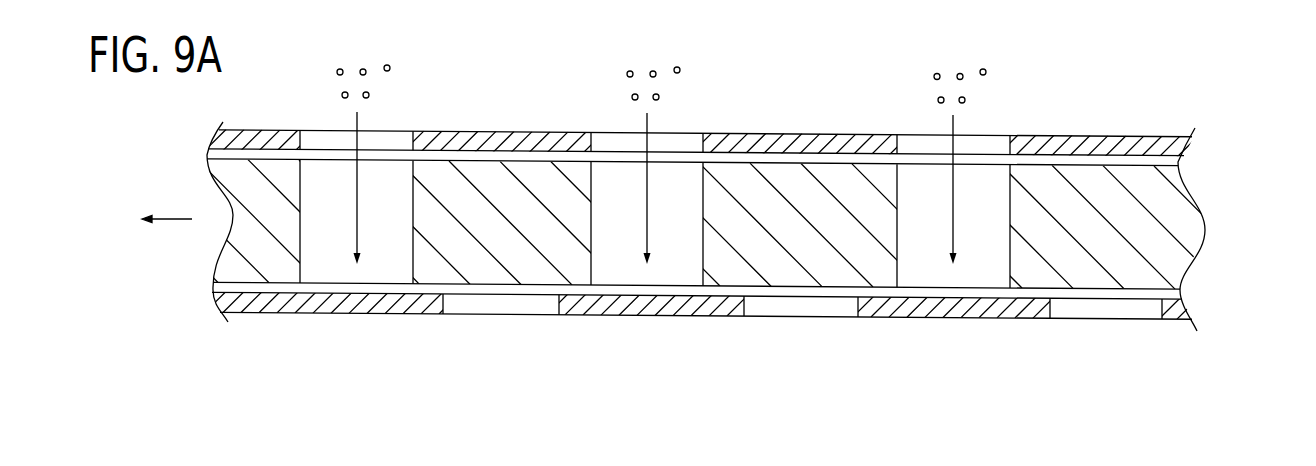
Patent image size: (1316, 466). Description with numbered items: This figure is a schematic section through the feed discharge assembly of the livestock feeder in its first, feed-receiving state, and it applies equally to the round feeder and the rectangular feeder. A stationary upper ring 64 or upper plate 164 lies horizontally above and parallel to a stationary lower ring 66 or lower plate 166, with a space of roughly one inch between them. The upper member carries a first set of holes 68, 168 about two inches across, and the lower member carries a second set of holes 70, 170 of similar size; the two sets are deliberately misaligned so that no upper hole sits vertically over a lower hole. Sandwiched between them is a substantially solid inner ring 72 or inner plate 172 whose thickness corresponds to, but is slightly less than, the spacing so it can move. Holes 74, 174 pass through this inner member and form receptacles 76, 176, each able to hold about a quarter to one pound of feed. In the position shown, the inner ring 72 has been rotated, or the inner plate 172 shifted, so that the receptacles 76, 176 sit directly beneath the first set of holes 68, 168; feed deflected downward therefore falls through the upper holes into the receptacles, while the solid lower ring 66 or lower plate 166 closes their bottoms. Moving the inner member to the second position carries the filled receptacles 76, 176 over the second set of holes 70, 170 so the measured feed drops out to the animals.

The upper ring 64 is at (670, 180).
The upper plate 164 is at (1147, 148).
The lower ring 66 is at (670, 257).
The lower plate 166 is at (1177, 315).
The first set of holes 68 is at (702, 117).
The first set of holes 168 is at (388, 138).
The second set of holes 70 is at (803, 352).
The second set of holes 170 is at (510, 303).
The inner ring 72 is at (705, 225).
The inner plate 172 is at (1168, 213).
The holes 74 is at (639, 244).
The holes 174 is at (302, 262).
The receptacles 76 is at (703, 318).
The receptacles 176 is at (382, 253).